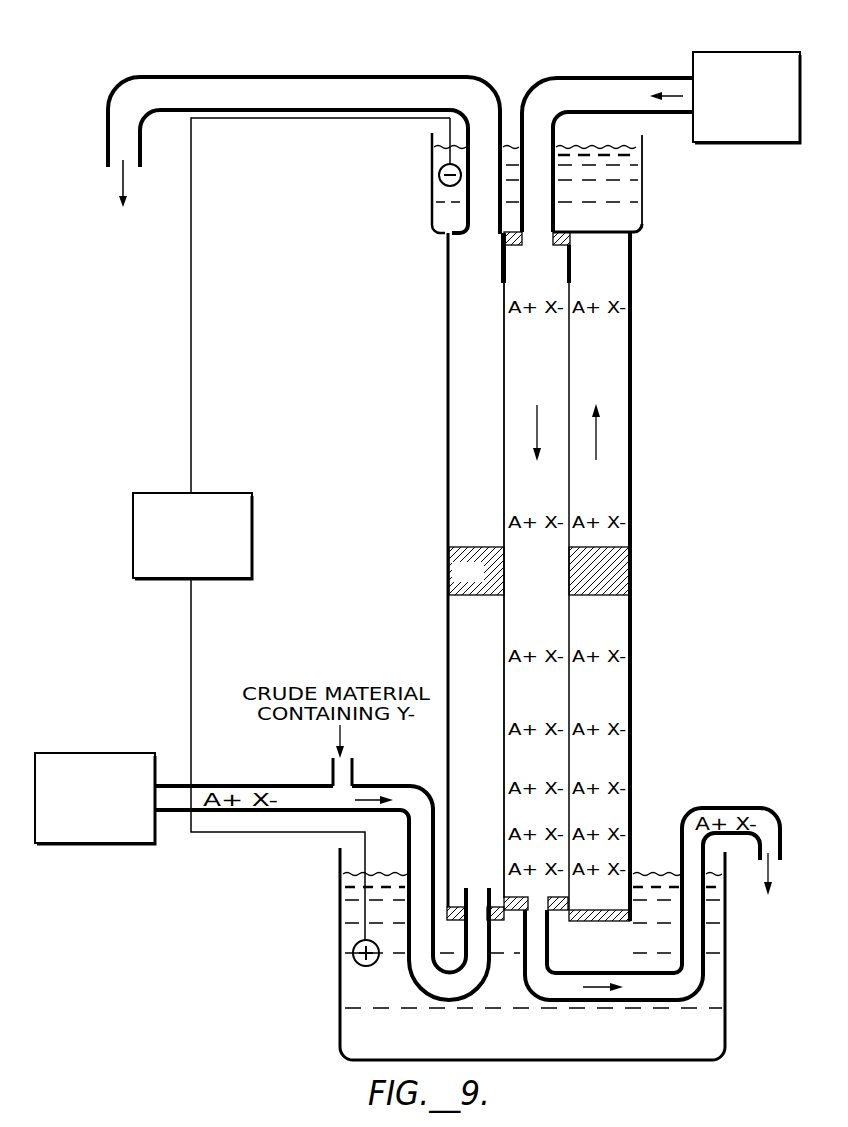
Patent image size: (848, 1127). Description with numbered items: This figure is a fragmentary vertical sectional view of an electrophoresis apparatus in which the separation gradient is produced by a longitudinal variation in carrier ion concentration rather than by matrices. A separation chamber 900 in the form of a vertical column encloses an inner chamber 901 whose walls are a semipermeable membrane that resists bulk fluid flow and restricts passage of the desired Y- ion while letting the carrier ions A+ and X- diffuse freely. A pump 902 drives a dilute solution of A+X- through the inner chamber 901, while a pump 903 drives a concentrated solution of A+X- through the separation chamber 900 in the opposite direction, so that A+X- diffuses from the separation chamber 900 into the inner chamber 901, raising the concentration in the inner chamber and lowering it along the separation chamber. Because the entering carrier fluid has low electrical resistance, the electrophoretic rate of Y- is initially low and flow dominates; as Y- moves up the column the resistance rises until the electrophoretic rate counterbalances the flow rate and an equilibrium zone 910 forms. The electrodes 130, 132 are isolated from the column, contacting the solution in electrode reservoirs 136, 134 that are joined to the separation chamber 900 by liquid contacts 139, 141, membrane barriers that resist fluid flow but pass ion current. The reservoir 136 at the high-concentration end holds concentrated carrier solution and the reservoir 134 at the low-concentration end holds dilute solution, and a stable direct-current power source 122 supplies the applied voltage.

The pump 902 is at (740, 50).
The pump 903 is at (68, 752).
The electrical power source 122 is at (222, 492).
The electrode 132 is at (438, 170).
The electrode 130 is at (352, 952).
The liquid contact 141 is at (643, 167).
The electrode reservoir 134 is at (627, 213).
The separation chamber 900 is at (632, 450).
The inner chamber 901 is at (562, 383).
The equilibrium zone 910 is at (618, 573).
The liquid contact 139 is at (602, 922).
The electrode reservoir 136 is at (372, 1037).